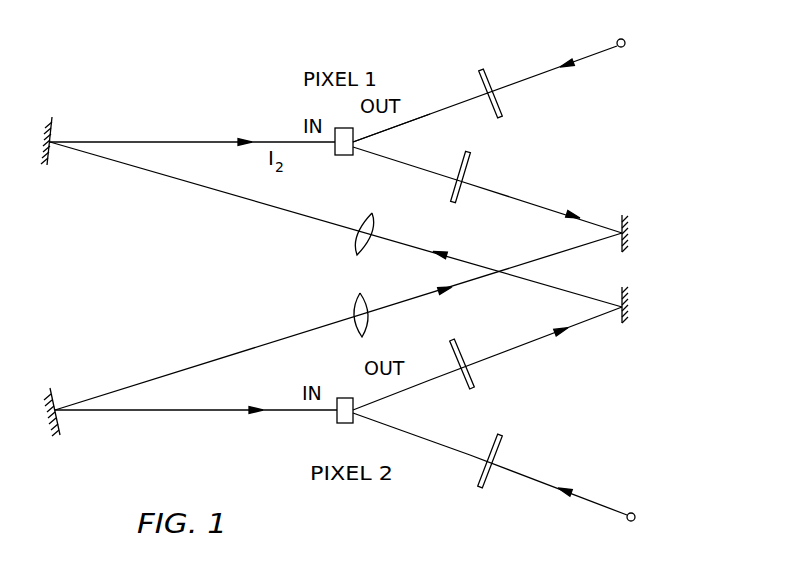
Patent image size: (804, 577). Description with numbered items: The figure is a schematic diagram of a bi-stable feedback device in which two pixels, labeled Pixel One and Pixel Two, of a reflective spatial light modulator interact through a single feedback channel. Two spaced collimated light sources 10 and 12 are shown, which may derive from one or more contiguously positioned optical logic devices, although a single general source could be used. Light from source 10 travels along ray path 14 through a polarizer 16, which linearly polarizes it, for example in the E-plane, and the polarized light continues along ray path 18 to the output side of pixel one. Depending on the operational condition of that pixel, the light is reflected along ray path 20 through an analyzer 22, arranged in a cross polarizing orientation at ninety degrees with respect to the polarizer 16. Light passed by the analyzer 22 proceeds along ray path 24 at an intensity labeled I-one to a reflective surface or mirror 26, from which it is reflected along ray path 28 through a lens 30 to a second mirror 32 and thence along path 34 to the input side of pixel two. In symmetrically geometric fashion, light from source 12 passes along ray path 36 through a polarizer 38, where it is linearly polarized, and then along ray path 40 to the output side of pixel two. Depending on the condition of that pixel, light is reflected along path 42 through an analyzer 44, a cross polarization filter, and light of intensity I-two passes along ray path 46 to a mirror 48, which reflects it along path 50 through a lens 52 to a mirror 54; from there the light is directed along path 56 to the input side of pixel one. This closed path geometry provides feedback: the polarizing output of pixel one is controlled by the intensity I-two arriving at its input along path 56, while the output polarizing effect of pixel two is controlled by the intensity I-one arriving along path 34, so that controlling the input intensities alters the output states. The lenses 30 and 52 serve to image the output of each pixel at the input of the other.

The collimated light source 10 is at (617, 40).
The collimated light source 12 is at (631, 521).
The ray path 14 is at (564, 71).
The polarizer 16 is at (501, 113).
The ray path 18 is at (466, 100).
The ray path 20 is at (397, 161).
The analyzer 22 is at (453, 203).
The ray path 24 is at (536, 203).
The reflective surface or mirror 26 is at (620, 218).
The ray path 28 is at (480, 282).
The lens 30 is at (368, 320).
The reflective surface or mirror 32 is at (58, 402).
The ray path 34 is at (175, 412).
The ray path 36 is at (536, 474).
The polarizer 38 is at (508, 432).
The ray path 40 is at (424, 436).
The ray path 42 is at (412, 389).
The analyzer 44 is at (455, 344).
The ray path 46 is at (567, 333).
The reflective surface or mirror 48 is at (620, 297).
The ray path 50 is at (236, 196).
The lens 52 is at (355, 242).
The reflective surface or mirror 54 is at (53, 129).
The ray path 56 is at (160, 141).